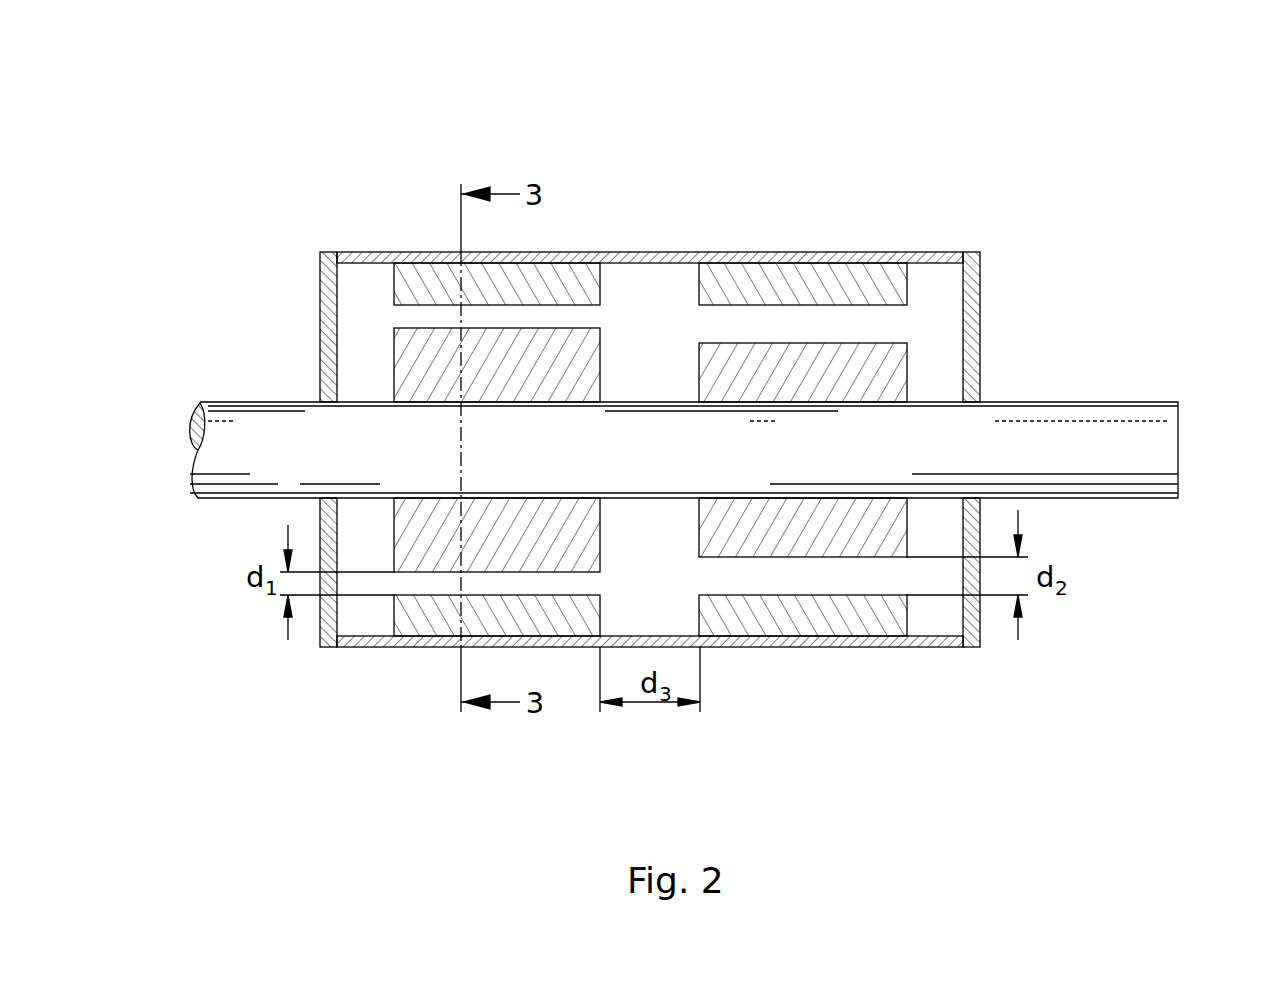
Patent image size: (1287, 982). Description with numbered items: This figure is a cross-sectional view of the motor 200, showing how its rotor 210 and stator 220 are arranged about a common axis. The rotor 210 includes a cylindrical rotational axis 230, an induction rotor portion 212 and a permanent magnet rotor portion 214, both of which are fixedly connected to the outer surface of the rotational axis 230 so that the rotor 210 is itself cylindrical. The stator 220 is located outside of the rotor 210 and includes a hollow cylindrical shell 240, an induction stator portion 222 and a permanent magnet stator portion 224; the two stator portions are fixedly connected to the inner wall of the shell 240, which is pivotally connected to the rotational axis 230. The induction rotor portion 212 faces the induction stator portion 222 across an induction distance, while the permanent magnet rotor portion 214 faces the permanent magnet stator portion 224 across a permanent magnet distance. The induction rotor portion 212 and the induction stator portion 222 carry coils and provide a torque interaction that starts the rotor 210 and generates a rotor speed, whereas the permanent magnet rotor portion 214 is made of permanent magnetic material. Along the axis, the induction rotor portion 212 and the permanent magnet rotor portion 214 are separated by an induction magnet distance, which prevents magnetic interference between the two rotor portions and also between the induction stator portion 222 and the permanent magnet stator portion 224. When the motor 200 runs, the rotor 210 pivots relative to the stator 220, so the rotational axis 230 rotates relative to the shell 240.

The motor 200 is at (277, 70).
The rotor 210 is at (1090, 274).
The induction rotor portion 212 is at (566, 362).
The permanent magnet rotor portion 214 is at (867, 377).
The stator 220 is at (605, 120).
The induction stator portion 222 is at (567, 273).
The permanent magnet stator portion 224 is at (753, 273).
The rotational axis 230 is at (1167, 458).
The shell 240 is at (940, 258).